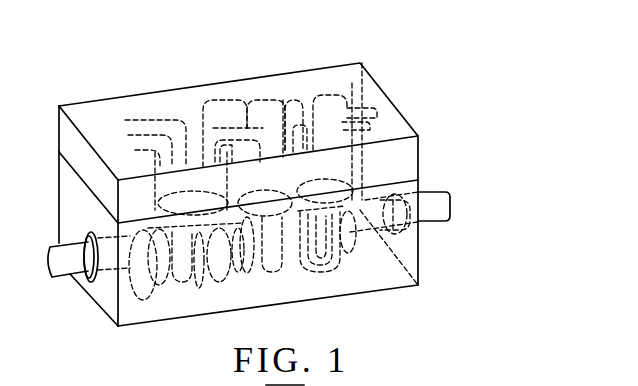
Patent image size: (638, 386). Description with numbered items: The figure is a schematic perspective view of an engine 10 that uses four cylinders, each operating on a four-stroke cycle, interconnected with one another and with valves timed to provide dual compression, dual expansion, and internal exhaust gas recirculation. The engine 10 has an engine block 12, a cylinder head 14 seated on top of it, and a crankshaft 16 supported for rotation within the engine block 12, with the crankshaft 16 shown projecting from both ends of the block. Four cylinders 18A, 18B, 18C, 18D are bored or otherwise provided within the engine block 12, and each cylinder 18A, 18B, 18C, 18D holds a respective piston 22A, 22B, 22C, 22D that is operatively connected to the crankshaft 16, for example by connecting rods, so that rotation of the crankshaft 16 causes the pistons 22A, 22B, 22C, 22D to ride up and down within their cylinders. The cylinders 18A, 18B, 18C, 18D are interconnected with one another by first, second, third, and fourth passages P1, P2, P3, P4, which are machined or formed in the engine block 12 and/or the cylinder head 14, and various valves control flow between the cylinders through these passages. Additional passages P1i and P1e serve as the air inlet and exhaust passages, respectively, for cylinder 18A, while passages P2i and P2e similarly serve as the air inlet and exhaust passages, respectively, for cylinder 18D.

The engine 10 is at (443, 47).
The engine block 12 is at (402, 246).
The cylinder head 14 is at (400, 165).
The crankshaft 16 is at (68, 276).
The cylinder 18A is at (137, 120).
The cylinder 18B is at (247, 110).
The cylinder 18C is at (290, 117).
The cylinder 18D is at (320, 120).
The piston 22A is at (190, 235).
The piston 22B is at (248, 190).
The piston 22C is at (295, 190).
The piston 22D is at (400, 220).
The first passage P1 is at (205, 127).
The air inlet passage P1i is at (125, 118).
The exhaust passage P1e is at (128, 168).
The second passage P2 is at (282, 100).
The exhaust passage P2e is at (345, 92).
The air inlet passage P2i is at (380, 133).
The third passage P3 is at (323, 250).
The fourth passage P4 is at (195, 143).